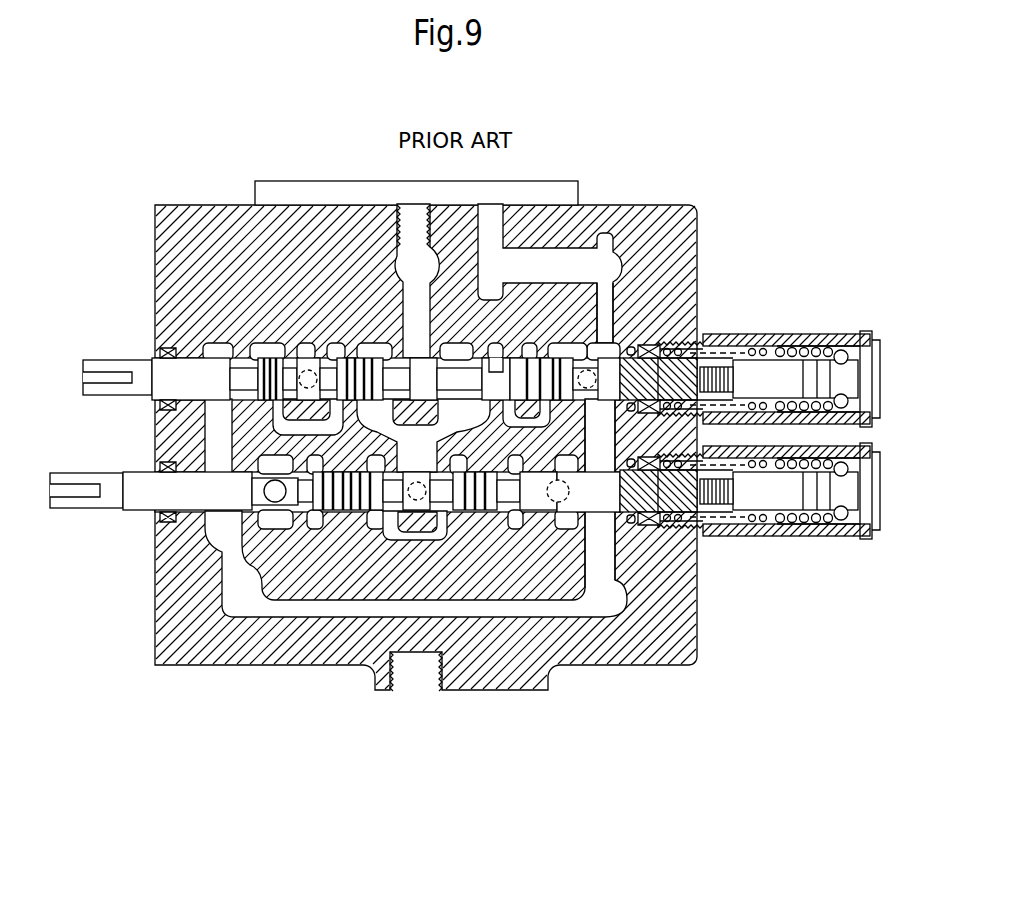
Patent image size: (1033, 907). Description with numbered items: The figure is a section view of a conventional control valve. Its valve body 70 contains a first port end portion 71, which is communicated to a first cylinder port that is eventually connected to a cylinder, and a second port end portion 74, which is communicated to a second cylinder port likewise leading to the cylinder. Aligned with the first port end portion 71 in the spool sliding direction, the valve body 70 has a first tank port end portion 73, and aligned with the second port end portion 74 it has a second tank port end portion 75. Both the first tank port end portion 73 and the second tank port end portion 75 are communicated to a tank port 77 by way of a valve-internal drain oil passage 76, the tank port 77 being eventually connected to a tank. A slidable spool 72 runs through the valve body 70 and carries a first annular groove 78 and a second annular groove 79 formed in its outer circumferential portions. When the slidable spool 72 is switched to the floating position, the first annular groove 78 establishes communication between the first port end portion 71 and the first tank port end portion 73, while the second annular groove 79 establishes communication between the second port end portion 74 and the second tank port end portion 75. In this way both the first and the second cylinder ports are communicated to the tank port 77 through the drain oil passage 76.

The valve body 70 is at (636, 213).
The first port end portion 71 is at (275, 367).
The slidable spool 72 is at (190, 370).
The first tank port end portion 73 is at (220, 352).
The second port end portion 74 is at (558, 352).
The second tank port end portion 75 is at (605, 310).
The valve-internal drain oil passage 76 is at (222, 525).
The tank port 77 is at (414, 670).
The first annular groove 78 is at (243, 365).
The second annular groove 79 is at (588, 360).